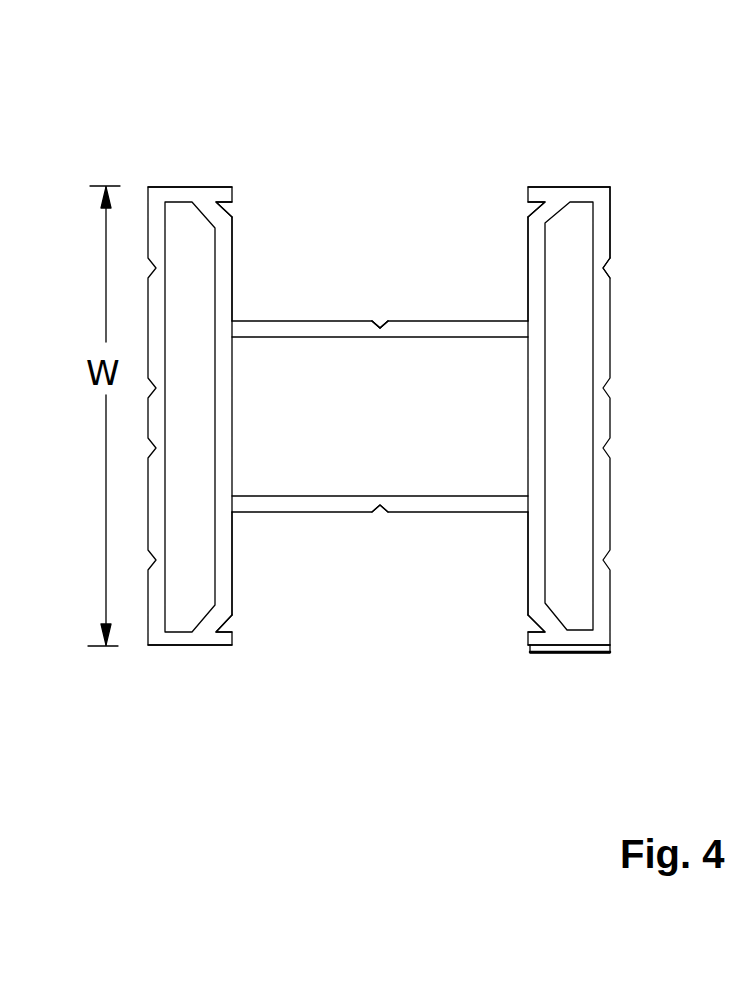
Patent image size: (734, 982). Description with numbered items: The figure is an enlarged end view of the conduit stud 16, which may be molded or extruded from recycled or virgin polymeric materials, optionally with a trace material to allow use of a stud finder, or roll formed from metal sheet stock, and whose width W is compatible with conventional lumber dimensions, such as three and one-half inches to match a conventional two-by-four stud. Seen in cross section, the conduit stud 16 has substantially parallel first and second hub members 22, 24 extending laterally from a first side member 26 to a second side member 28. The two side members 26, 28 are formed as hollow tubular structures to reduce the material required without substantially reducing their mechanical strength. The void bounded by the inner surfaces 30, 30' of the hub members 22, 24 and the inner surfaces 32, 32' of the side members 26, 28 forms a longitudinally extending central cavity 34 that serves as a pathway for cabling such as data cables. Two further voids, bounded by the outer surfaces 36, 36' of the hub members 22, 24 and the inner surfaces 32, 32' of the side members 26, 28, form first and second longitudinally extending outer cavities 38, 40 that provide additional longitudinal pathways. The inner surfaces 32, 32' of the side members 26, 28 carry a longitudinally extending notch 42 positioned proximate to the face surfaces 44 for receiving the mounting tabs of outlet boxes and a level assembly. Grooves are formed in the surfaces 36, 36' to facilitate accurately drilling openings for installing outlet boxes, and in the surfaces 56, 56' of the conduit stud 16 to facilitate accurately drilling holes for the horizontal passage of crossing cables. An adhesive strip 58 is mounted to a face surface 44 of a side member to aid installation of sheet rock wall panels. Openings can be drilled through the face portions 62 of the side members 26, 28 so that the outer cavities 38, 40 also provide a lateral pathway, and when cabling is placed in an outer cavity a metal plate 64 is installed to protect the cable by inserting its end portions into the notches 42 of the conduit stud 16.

The conduit stud 16 is at (663, 132).
The first hub member 22 is at (438, 338).
The second hub member 24 is at (445, 496).
The first side member 26 is at (234, 578).
The second side member 28 is at (528, 568).
The inner surface of first hub member 30 is at (380, 357).
The inner surface of second hub member 30' is at (380, 471).
The inner surface of first side member 32 is at (265, 269).
The inner surface of second side member 32' is at (495, 269).
The central cavity 34 is at (388, 436).
The outer surface of first hub member 36 is at (359, 299).
The outer surface of second hub member 36' is at (353, 539).
The first outer cavity 38 is at (410, 254).
The second outer cavity 40 is at (395, 605).
The notch 42 is at (234, 205).
The face surface 44 is at (192, 183).
The surface of conduit stud 56 is at (605, 416).
The surface of conduit stud 56' is at (124, 416).
The adhesive strip 58 is at (603, 656).
The face portion 62 is at (614, 222).
The metal plate 64 is at (380, 322).